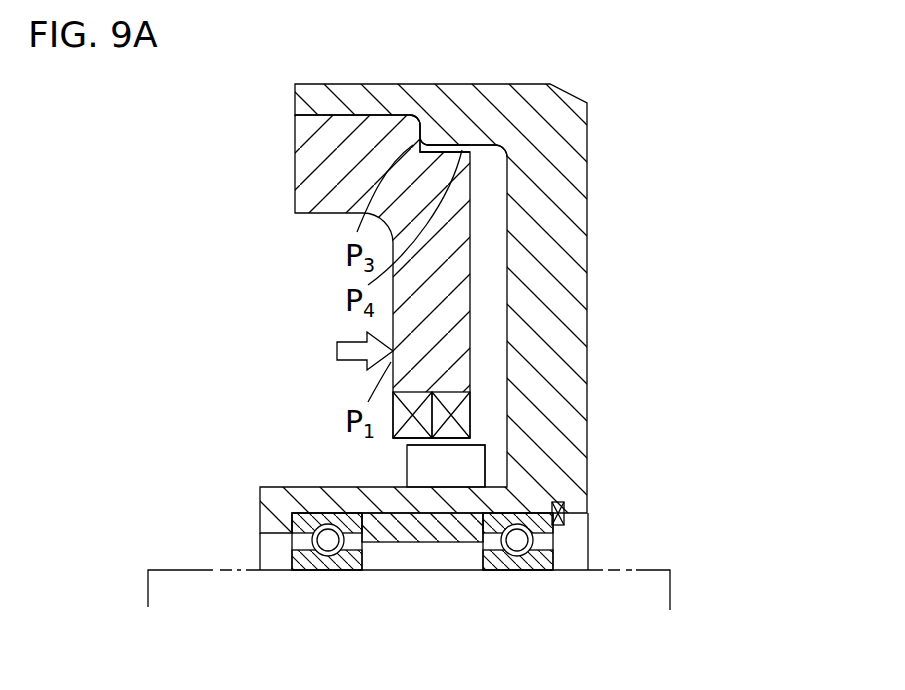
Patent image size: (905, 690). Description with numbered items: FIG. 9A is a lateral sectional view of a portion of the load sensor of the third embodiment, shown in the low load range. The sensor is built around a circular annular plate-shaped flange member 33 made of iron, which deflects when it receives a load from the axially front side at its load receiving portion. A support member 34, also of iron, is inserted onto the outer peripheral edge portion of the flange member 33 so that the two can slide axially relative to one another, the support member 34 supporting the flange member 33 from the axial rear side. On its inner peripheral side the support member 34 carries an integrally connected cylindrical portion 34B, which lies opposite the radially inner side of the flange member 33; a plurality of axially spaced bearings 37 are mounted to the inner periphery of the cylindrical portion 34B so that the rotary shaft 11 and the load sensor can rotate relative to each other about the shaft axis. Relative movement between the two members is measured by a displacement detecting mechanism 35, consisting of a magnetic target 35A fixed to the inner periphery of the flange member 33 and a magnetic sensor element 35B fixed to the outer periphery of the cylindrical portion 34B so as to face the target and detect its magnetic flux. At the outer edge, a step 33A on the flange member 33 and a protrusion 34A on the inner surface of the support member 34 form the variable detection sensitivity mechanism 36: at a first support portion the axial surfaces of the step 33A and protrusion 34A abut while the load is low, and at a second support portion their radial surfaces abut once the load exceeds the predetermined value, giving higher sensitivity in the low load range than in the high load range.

The rotary shaft 11 is at (647, 573).
The flange member 33 is at (307, 153).
The step 33A is at (439, 132).
The support member 34 is at (570, 203).
The protrusion 34A is at (442, 132).
The cylindrical portion 34B is at (412, 502).
The displacement detecting mechanism 35 is at (393, 452).
The magnetic target 35A is at (467, 412).
The magnetic sensor element 35B is at (473, 462).
The variable detection sensitivity mechanism 36 is at (452, 135).
The bearings 37 is at (546, 529).